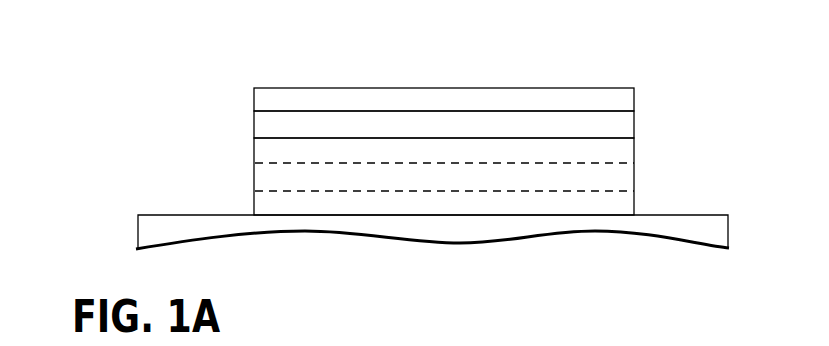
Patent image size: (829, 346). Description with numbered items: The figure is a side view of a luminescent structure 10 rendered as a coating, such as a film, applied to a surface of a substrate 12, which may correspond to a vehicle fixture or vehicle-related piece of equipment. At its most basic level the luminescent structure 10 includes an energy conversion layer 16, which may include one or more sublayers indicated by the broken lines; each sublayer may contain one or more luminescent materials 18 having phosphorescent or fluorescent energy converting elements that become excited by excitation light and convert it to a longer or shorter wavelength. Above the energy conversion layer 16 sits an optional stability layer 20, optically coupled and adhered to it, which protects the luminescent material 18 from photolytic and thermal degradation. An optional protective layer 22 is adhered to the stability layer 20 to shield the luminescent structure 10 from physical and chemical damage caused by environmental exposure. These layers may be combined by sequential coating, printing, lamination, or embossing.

The luminescent structure 10 is at (577, 61).
The substrate 12 is at (677, 214).
The energy conversion layer 16 is at (254, 173).
The luminescent material 18 is at (595, 177).
The stability layer 20 is at (254, 125).
The protective layer 22 is at (340, 88).